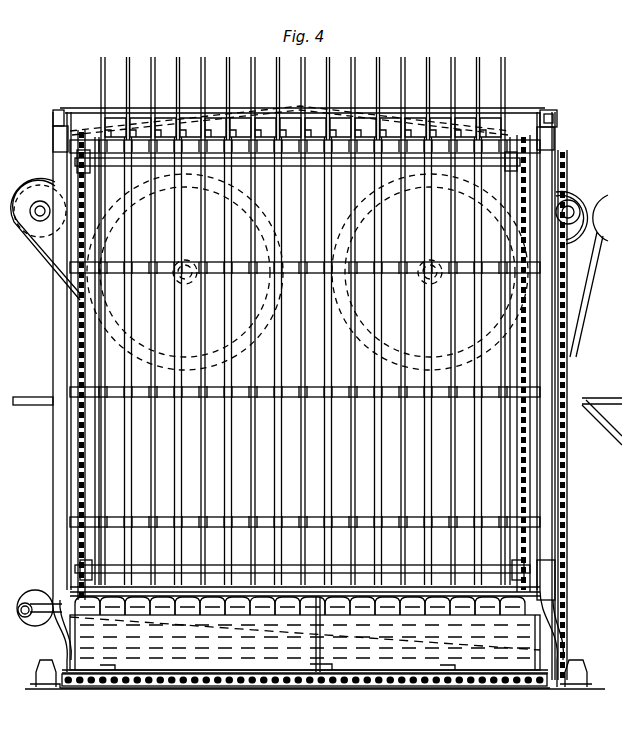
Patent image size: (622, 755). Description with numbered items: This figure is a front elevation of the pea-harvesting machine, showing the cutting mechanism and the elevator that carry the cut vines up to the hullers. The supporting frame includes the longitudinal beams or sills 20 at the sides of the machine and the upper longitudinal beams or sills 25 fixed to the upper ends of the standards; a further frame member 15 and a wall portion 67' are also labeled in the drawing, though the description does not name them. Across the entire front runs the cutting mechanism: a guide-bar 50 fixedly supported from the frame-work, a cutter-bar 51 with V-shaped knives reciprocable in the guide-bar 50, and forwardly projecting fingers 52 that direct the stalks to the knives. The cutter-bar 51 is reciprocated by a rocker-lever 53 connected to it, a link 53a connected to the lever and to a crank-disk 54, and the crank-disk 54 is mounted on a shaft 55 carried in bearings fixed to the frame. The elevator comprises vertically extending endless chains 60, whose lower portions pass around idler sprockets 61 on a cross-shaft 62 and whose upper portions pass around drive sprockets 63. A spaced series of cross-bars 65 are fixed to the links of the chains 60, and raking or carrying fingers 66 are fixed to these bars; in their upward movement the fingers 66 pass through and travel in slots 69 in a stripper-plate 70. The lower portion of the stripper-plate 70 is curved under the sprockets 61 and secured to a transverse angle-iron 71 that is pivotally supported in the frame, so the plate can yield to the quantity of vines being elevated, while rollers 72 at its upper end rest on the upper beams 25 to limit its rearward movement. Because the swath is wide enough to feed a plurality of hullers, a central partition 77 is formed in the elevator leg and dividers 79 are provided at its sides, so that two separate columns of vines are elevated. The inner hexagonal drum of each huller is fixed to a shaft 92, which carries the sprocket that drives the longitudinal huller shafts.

The truss bracket 15 is at (606, 398).
The longitudinal beam or sill 20 is at (553, 560).
The upper longitudinal beam or sill 25 is at (60, 134).
The guide-bar 50 is at (484, 675).
The cutter-bar 51 is at (446, 681).
The fingers 52 is at (384, 681).
The rocker-lever 53 is at (610, 610).
The link 53a is at (172, 632).
The crank-disk 54 is at (40, 592).
The shaft 55 is at (45, 606).
The endless chain 60 is at (68, 490).
The idler sprocket 61 is at (82, 565).
The cross-shaft 62 is at (246, 570).
The drive sprocket 63 is at (80, 158).
The cross-bar 65 is at (510, 140).
The raking or carrying finger 66 is at (505, 90).
The bottom plate 67' is at (305, 689).
The slot 69 is at (128, 168).
The stripper-plate 70 is at (469, 592).
The angle-iron 71 is at (568, 360).
The rollers 72 is at (55, 117).
The central partition 77 is at (318, 672).
The divider 79 is at (45, 676).
The shaft 92 is at (604, 205).